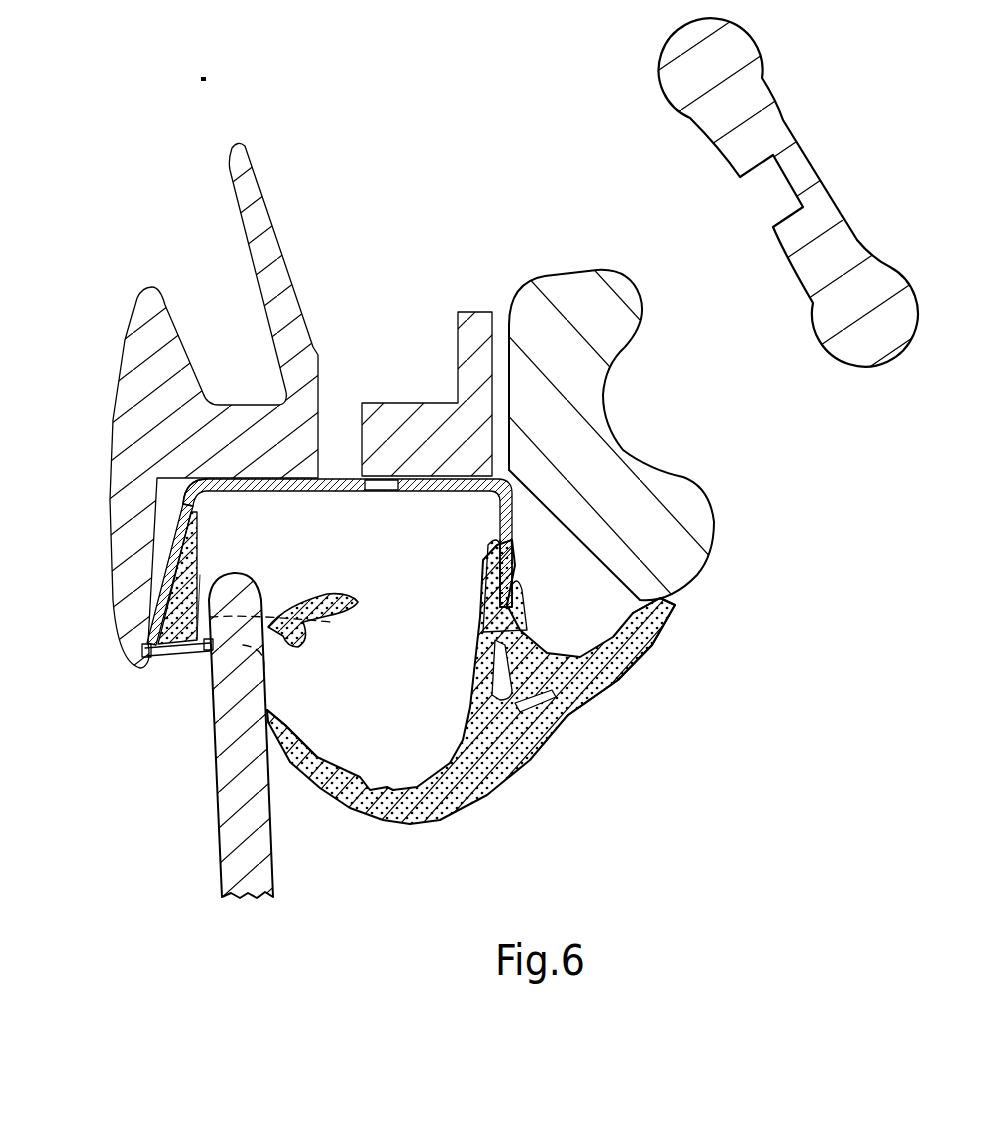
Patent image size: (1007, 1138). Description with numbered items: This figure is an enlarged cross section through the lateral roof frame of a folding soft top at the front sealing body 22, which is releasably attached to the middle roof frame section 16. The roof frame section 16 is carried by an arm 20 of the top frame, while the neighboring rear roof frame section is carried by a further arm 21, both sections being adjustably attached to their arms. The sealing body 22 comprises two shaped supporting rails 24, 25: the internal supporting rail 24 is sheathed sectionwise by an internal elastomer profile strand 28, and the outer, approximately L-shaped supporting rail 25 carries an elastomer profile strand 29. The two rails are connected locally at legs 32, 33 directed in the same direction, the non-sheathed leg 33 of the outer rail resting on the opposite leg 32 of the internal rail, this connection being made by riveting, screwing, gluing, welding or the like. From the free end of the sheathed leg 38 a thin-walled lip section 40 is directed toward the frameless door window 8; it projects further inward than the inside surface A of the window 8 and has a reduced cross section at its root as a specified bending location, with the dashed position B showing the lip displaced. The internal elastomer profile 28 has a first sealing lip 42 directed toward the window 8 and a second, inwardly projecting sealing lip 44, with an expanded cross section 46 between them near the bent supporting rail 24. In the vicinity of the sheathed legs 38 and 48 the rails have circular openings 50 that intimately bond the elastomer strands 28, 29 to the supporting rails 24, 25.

The window 8 is at (222, 883).
The middle roof frame section 16 is at (107, 403).
The arm 20 is at (567, 427).
The arm 21 is at (755, 83).
The sealing body 22 is at (483, 704).
The supporting rail 24 is at (347, 546).
The supporting rail 25 is at (204, 503).
The elastomer profile strand 28 is at (467, 613).
The elastomer profile strand 29 is at (200, 572).
The leg 32 is at (408, 473).
The leg 33 is at (383, 491).
The sheathed leg 38 is at (155, 597).
The lip section 40 is at (327, 614).
The first sealing lip 42 is at (327, 770).
The second sealing lip 44 is at (650, 633).
The expanded cross section 46 is at (565, 742).
The sheathed leg 48 is at (494, 673).
The circular openings 50 is at (167, 557).
The inside surface A is at (273, 822).
The direction B is at (210, 787).